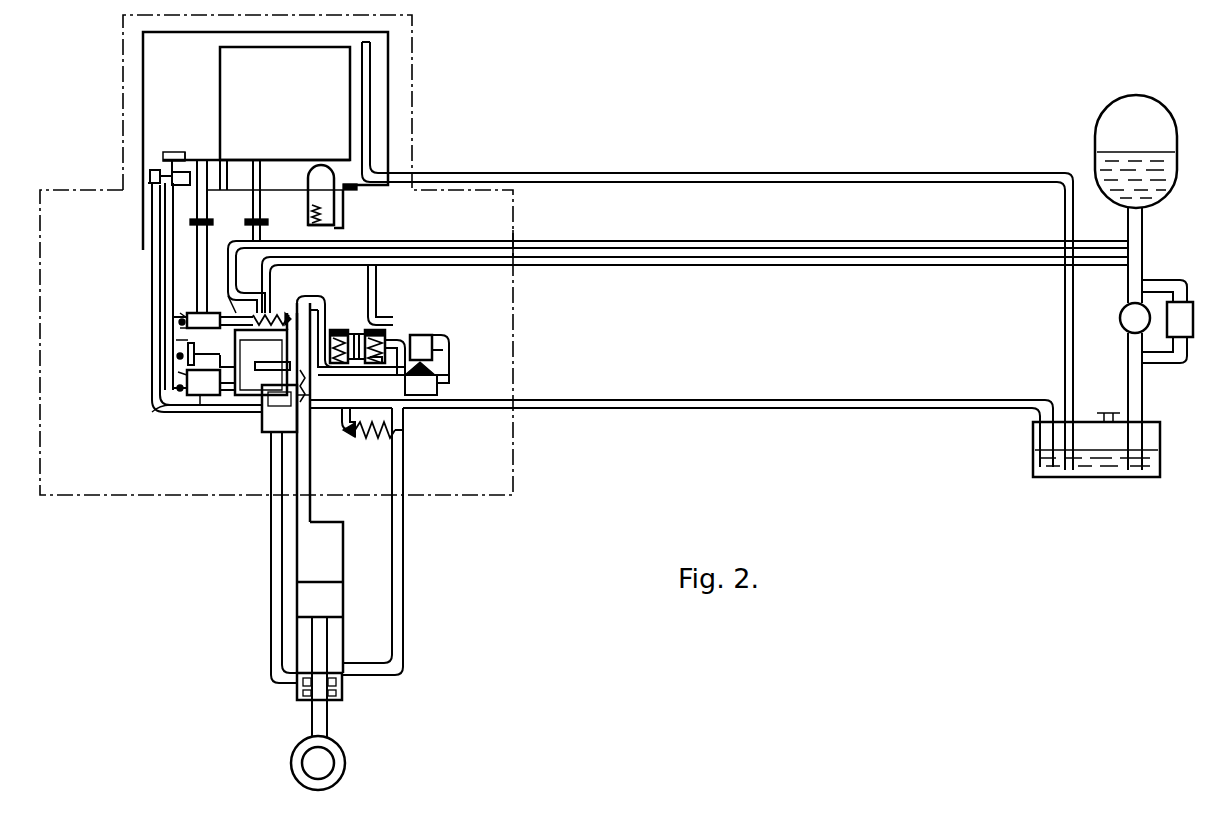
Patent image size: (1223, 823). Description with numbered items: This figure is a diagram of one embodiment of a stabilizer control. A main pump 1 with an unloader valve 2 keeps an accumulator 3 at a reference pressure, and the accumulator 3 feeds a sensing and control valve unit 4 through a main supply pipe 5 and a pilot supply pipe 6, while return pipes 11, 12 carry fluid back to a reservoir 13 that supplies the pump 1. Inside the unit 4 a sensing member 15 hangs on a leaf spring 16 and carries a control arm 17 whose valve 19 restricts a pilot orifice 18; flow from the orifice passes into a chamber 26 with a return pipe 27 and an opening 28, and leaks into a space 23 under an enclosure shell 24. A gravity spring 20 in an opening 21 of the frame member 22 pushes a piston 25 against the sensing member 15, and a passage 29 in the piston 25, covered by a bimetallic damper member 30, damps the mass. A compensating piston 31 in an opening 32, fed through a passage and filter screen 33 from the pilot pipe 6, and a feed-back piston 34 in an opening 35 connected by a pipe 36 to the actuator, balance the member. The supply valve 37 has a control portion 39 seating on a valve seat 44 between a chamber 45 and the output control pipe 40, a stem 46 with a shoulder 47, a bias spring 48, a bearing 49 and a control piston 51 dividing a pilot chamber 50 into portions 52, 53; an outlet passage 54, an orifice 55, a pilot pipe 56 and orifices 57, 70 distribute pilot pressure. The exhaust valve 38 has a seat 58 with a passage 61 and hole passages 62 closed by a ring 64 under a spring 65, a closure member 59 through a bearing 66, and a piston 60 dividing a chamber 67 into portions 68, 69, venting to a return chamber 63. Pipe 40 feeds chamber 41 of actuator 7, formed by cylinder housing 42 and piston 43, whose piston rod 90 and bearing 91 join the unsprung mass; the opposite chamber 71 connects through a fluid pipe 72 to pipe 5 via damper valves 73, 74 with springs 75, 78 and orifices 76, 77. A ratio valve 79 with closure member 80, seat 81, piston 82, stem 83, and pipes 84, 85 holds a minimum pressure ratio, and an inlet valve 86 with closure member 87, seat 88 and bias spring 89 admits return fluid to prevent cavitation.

The main pump 1 is at (1121, 327).
The unloader valve 2 is at (1190, 326).
The accumulator 3 is at (1097, 126).
The sensing and control valve unit 4 is at (541, 210).
The supply pipe 5 is at (765, 265).
The pilot supply pipe 6 is at (758, 242).
The actuator 7 is at (343, 542).
The return pipe 11 is at (718, 402).
The return pipe 12 is at (716, 178).
The reservoir 13 is at (1104, 478).
The sensing member 15 is at (296, 88).
The leaf spring 16 is at (220, 165).
The control arm 17 is at (200, 142).
The pilot orifice 18 is at (236, 175).
The valve 19 is at (173, 148).
The gravity spring 20 is at (310, 228).
The opening 21 is at (310, 212).
The frame member 22 is at (497, 221).
The space 23 is at (380, 80).
The enclosure shell 24 is at (413, 48).
The piston 25 is at (321, 166).
The chamber 26 is at (145, 183).
The fluid return pipe 27 is at (152, 233).
The opening 28 is at (160, 165).
The passage 29 is at (343, 222).
The bimetallic damper member 30 is at (357, 189).
The compensating piston 31 is at (261, 177).
The opening 32 is at (264, 202).
The passage and filter screen 33 is at (246, 224).
The feed-back piston 34 is at (191, 207).
The opening 35 is at (208, 206).
The pipe 36 is at (191, 236).
The supply valve 37 is at (199, 304).
The exhaust valve 38 is at (174, 440).
The fluid flow control portion 39 is at (300, 333).
The fluid output control pipe 40 is at (305, 495).
The work actuator chamber 41 is at (310, 530).
The cylinder housing 42 is at (344, 570).
The piston 43 is at (335, 602).
The valve seat portion 44 is at (261, 362).
The chamber 45 is at (257, 365).
The actuating stem 46 is at (270, 313).
The shoulder 47 is at (238, 335).
The bias spring 48 is at (290, 312).
The bearing 49 is at (247, 313).
The pilot pressure control chamber 50 is at (228, 305).
The control piston 51 is at (176, 340).
The chamber portion 52 is at (180, 328).
The chamber portion 53 is at (180, 313).
The outlet passage 54 is at (207, 347).
The orifice 55 is at (177, 356).
The pilot pipe 56 is at (152, 257).
The orifice 57 is at (178, 322).
The valve seat 58 is at (267, 425).
The valve closure member 59 is at (272, 420).
The actuating piston 60 is at (200, 398).
The passage 61 is at (272, 357).
The hole passages 62 is at (303, 385).
The return pressure chamber 63 is at (258, 400).
The closure ring 64 is at (297, 395).
The bias spring 65 is at (300, 373).
The bearing 66 is at (222, 392).
The chamber 67 is at (160, 410).
The chamber portion 68 is at (178, 372).
The chamber portion 69 is at (216, 363).
The orifice 70 is at (177, 388).
The chamber 71 is at (305, 636).
The fluid pipe 72 is at (409, 584).
The damper valve 73 is at (342, 300).
The damper valve 74 is at (426, 322).
The spring 75 is at (341, 367).
The orifice 76 is at (339, 330).
The orifice 77 is at (374, 367).
The bias spring 78 is at (376, 330).
The ratio valve 79 is at (435, 370).
The valve closure member 80 is at (421, 387).
The valve seat 81 is at (445, 380).
The piston 82 is at (424, 335).
The stem 83 is at (443, 350).
The connecting pipe 84 is at (449, 333).
The pipe 85 is at (399, 325).
The inlet valve 86 is at (374, 442).
The valve closure member 87 is at (356, 440).
The valve seat 88 is at (346, 437).
The bias spring 89 is at (395, 432).
The piston rod 90 is at (327, 722).
The bearing 91 is at (336, 752).